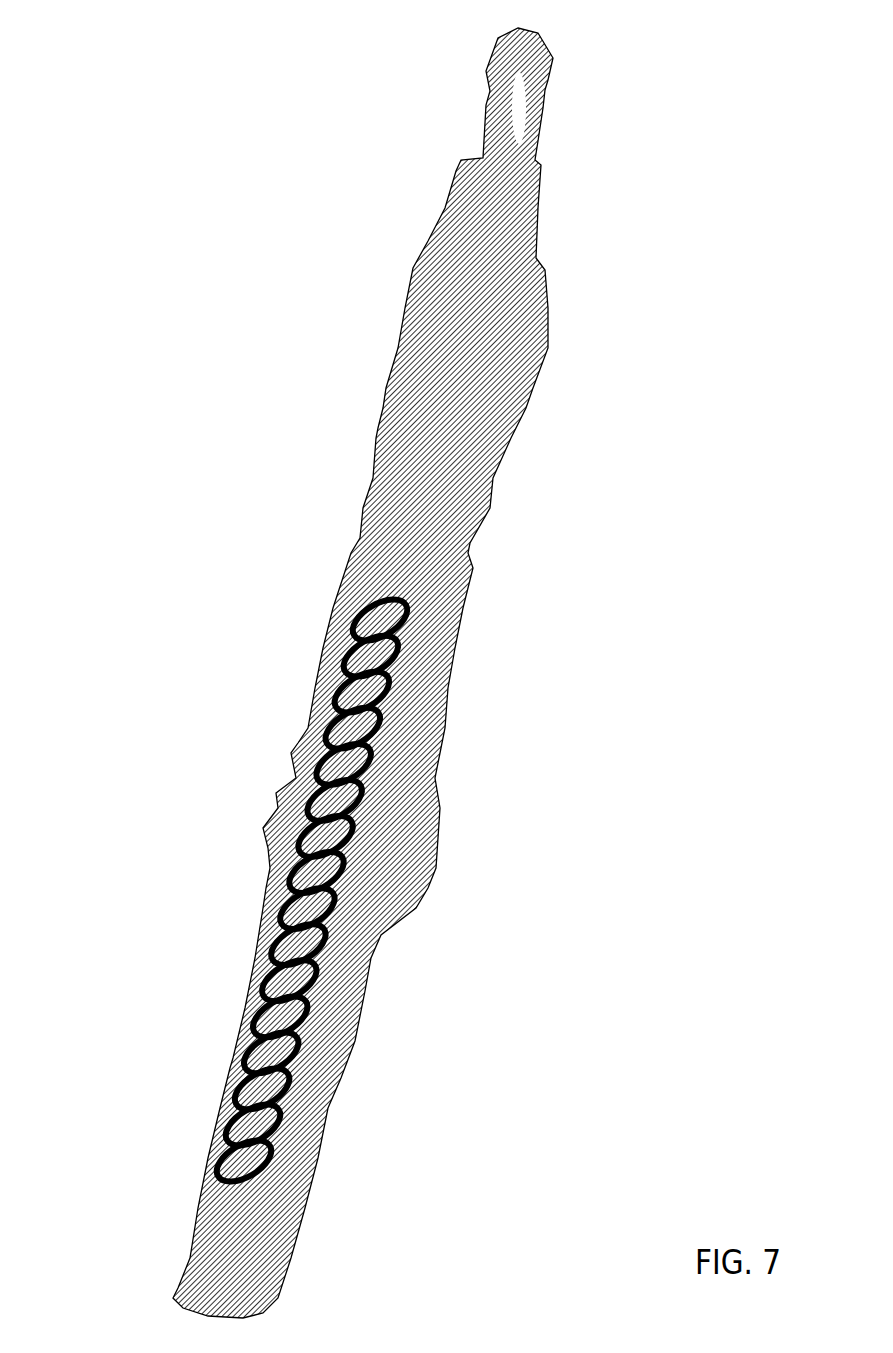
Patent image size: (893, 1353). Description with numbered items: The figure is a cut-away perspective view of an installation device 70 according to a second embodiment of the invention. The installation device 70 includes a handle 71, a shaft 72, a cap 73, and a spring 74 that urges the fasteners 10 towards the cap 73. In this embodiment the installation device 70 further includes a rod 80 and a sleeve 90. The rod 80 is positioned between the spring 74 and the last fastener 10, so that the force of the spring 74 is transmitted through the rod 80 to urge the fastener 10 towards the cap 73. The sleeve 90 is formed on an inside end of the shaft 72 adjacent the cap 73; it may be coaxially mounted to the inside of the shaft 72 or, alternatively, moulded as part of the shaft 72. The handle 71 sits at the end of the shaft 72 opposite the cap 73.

The installation device 70 is at (140, 140).
The fastener 10 is at (537, 82).
The cap 73 is at (447, 202).
The sleeve 90 is at (392, 363).
The rod 80 is at (376, 500).
The shaft 72 is at (434, 616).
The spring 74 is at (245, 1018).
The handle 71 is at (302, 1108).